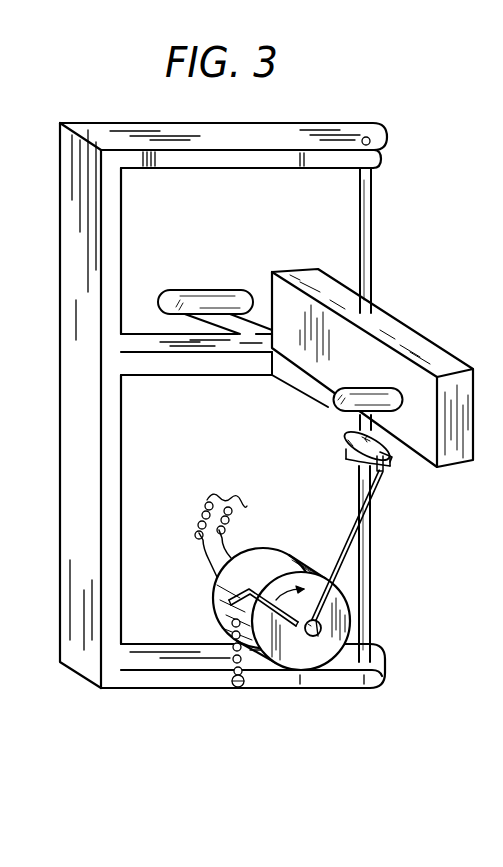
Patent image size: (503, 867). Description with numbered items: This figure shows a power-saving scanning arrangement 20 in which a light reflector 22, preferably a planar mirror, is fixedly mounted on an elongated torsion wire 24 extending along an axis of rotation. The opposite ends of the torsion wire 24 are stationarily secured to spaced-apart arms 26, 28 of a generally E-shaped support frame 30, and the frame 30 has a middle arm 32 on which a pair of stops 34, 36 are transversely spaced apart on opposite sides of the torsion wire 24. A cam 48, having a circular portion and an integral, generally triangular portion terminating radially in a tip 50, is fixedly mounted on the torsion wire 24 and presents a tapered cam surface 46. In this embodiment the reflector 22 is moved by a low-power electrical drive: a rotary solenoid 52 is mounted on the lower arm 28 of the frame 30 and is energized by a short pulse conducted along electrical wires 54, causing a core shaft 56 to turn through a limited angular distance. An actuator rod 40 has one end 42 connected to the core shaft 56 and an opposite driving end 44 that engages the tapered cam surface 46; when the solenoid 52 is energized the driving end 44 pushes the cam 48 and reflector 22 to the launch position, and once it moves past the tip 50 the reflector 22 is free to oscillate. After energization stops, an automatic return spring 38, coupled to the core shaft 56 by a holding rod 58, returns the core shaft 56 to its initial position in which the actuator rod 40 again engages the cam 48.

The power-saving scanning arrangement 20 is at (412, 214).
The light reflector 22 is at (471, 391).
The torsion wire 24 is at (372, 257).
The arm 26 is at (371, 131).
The lower arm 28 is at (193, 648).
The support frame 30 is at (129, 434).
The middle arm 32 is at (167, 365).
The stop 34 is at (231, 290).
The stop 36 is at (375, 390).
The automatic return spring 38 is at (227, 647).
The actuator rod 40 is at (350, 537).
The end 42 is at (322, 612).
The driving end 44 is at (381, 478).
The tapered cam surface 46 is at (352, 455).
The cam 48 is at (340, 433).
The tip 50 is at (393, 462).
The rotary solenoid 52 is at (287, 557).
The electrical wires 54 is at (230, 517).
The core shaft 56 is at (320, 643).
The holding rod 58 is at (283, 672).